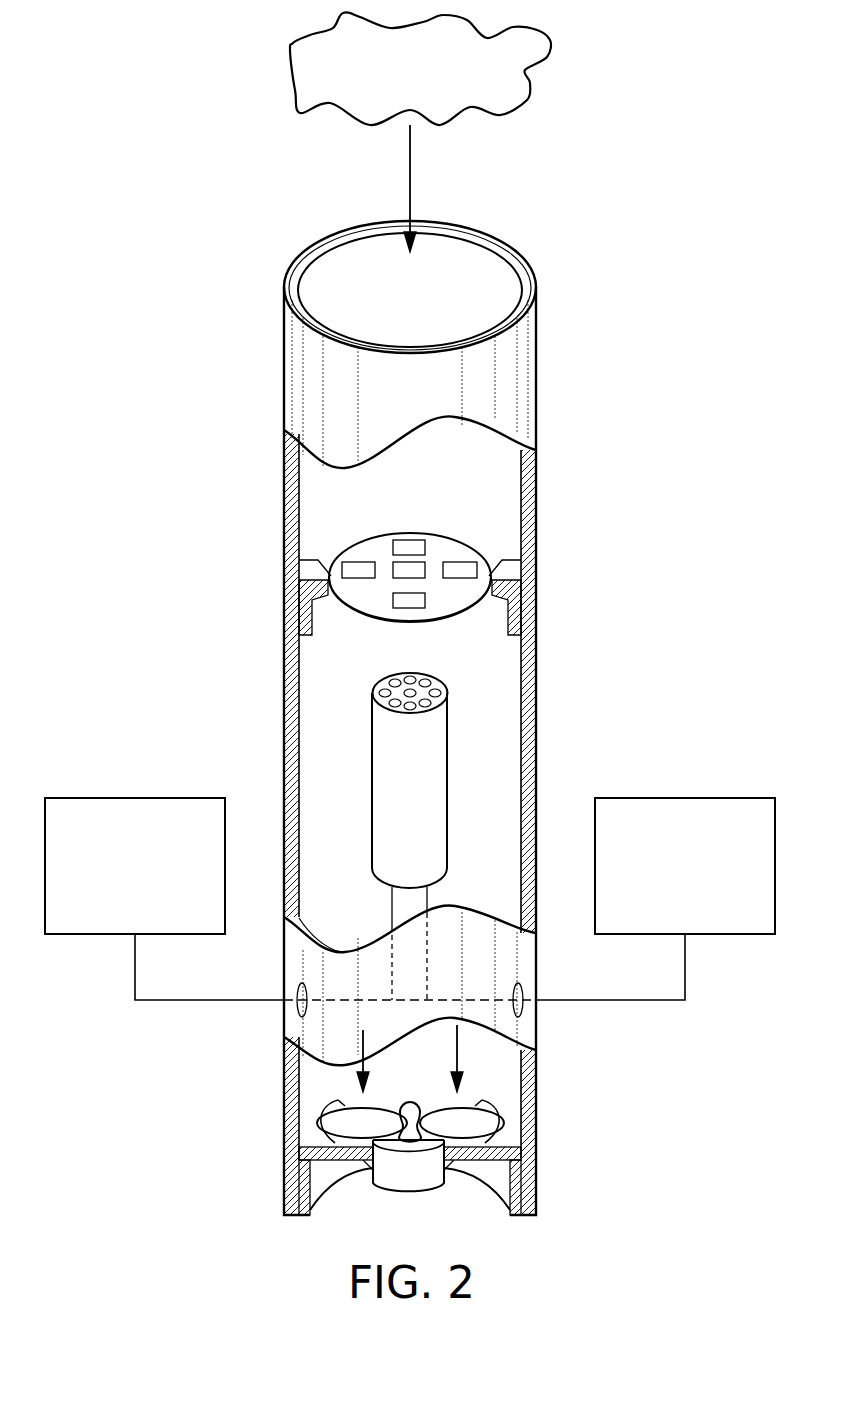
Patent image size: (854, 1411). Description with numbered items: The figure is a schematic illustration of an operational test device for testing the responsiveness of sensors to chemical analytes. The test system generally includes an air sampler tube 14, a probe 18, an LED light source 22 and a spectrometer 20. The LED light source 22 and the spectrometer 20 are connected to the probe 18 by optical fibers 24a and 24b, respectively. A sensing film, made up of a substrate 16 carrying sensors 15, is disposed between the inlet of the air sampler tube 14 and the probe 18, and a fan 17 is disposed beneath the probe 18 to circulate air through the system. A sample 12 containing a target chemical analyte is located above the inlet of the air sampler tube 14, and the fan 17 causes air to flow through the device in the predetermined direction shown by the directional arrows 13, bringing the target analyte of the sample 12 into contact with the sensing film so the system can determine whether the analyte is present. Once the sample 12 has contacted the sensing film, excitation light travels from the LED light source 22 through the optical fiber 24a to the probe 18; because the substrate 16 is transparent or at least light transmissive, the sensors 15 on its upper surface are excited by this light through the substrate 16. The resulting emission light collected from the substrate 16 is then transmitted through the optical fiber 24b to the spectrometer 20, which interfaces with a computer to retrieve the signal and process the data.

The sample 12 is at (548, 58).
The directional arrows 13 is at (410, 172).
The air sampler tube 14 is at (536, 381).
The sensors 15 is at (460, 569).
The substrate 16 is at (490, 550).
The fan 17 is at (410, 1172).
The probe 18 is at (447, 762).
The spectrometer 20 is at (700, 907).
The LED light source 22 is at (149, 915).
The optical fiber 24a is at (165, 1000).
The optical fiber 24b is at (665, 1000).